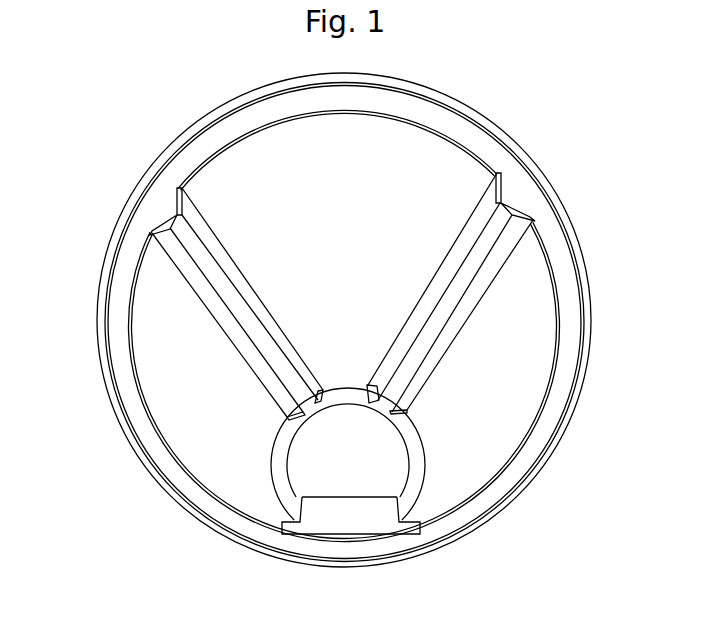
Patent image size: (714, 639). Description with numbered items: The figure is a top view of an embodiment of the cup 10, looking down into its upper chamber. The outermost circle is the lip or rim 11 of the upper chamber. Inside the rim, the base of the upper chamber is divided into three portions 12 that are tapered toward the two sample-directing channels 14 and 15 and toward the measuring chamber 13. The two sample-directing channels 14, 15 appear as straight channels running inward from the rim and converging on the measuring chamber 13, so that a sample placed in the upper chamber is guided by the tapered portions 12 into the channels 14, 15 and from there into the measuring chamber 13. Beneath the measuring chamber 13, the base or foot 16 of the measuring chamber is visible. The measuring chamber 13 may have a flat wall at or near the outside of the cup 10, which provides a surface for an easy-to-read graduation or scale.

The cup 10 is at (82, 168).
The lip or rim of the upper chamber 11 is at (463, 121).
The tapered portions of the base of the upper chamber 12 is at (360, 197).
The measuring chamber 13 is at (363, 459).
The sample-directing channel 14 is at (441, 315).
The sample-directing channel 15 is at (236, 308).
The base or foot of the measuring chamber 16 is at (327, 517).